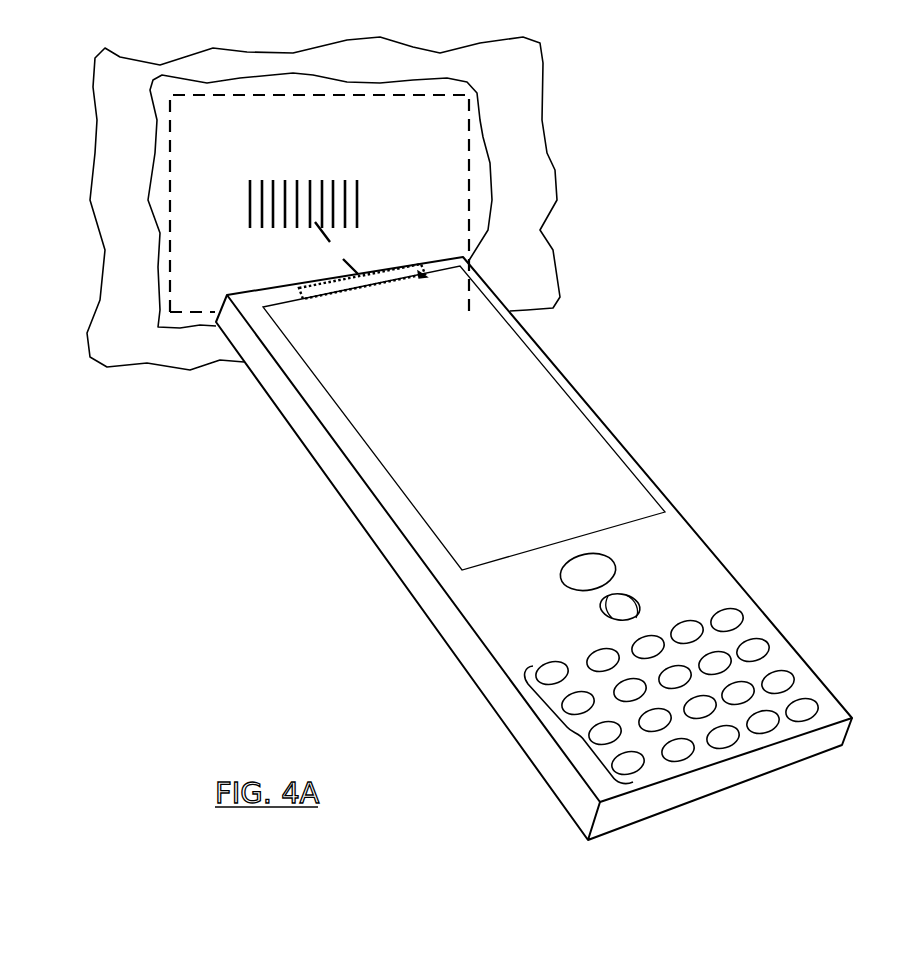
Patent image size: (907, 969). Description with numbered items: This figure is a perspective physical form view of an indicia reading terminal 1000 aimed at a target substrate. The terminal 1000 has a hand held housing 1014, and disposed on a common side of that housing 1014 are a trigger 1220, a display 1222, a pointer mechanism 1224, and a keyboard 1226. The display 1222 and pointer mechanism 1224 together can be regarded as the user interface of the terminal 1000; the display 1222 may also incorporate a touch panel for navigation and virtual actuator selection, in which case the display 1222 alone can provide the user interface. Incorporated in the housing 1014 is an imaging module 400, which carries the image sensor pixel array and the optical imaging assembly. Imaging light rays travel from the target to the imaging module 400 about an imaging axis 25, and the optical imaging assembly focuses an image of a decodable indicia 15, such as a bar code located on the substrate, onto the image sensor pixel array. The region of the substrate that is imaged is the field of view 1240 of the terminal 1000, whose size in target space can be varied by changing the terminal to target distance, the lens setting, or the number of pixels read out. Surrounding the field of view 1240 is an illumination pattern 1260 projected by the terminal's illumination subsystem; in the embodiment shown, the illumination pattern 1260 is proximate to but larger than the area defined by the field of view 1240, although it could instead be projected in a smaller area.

The decodable indicia 15 is at (357, 194).
The imaging axis 25 is at (335, 247).
The imaging module 400 is at (430, 270).
The indicia reading terminal 1000 is at (665, 271).
The hand held housing 1014 is at (760, 630).
The trigger 1220 is at (612, 563).
The display 1222 is at (662, 505).
The pointer mechanism 1224 is at (640, 600).
The keyboard 1226 is at (567, 735).
The field of view 1240 is at (469, 174).
The illumination pattern 1260 is at (481, 135).